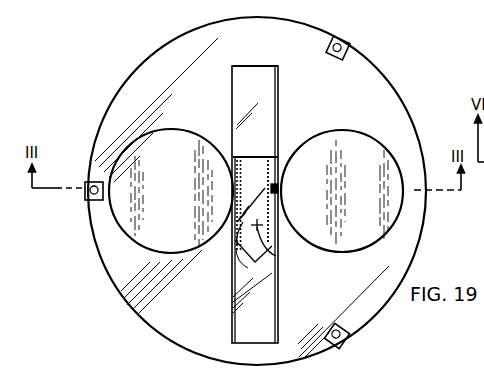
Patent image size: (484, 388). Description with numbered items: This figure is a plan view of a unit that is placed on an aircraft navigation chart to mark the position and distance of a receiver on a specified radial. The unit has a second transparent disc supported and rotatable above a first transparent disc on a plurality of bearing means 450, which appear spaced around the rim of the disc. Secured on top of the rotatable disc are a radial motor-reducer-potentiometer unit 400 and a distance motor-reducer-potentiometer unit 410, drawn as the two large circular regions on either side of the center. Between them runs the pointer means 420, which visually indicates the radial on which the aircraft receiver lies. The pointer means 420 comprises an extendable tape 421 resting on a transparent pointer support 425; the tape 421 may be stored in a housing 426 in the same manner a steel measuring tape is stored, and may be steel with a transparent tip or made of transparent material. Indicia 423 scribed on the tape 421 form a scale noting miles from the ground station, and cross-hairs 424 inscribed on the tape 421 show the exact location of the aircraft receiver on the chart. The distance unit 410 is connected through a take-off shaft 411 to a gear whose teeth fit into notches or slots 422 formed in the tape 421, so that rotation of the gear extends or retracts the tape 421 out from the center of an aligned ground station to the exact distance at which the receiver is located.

The radial motor-reducer-potentiometer unit 400 is at (150, 245).
The distance motor-reducer-potentiometer unit 410 is at (372, 240).
The take-off shaft 411 is at (278, 191).
The pointer means 420 is at (262, 204).
The extendable tape 421 is at (264, 262).
The slots 422 is at (250, 157).
The indicia 423 is at (236, 250).
The cross-hairs 424 is at (258, 259).
The transparent pointer support 425 is at (278, 307).
The housing 426 is at (235, 84).
The bearing means 450 is at (344, 42).